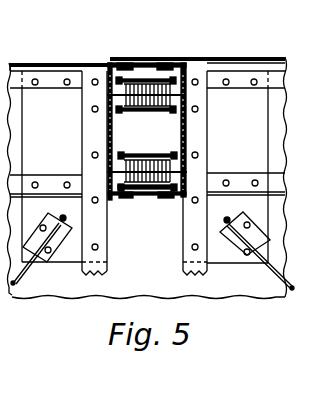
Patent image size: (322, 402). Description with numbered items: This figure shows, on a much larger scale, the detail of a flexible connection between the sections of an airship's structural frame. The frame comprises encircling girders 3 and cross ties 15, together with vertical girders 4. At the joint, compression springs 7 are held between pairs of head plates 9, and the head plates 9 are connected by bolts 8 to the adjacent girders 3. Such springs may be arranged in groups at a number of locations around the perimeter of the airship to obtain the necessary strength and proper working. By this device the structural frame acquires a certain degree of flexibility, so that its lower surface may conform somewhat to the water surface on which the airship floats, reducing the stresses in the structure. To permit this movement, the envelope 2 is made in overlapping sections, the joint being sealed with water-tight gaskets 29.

The envelope 2 is at (196, 58).
The water-tight gasket 29 is at (107, 62).
The encircling girder 3 is at (113, 58).
The vertical girder 4 is at (108, 270).
The compression spring 7 is at (146, 87).
The bolt 8 is at (139, 112).
The head plate 9 is at (123, 113).
The cross tie 15 is at (20, 272).